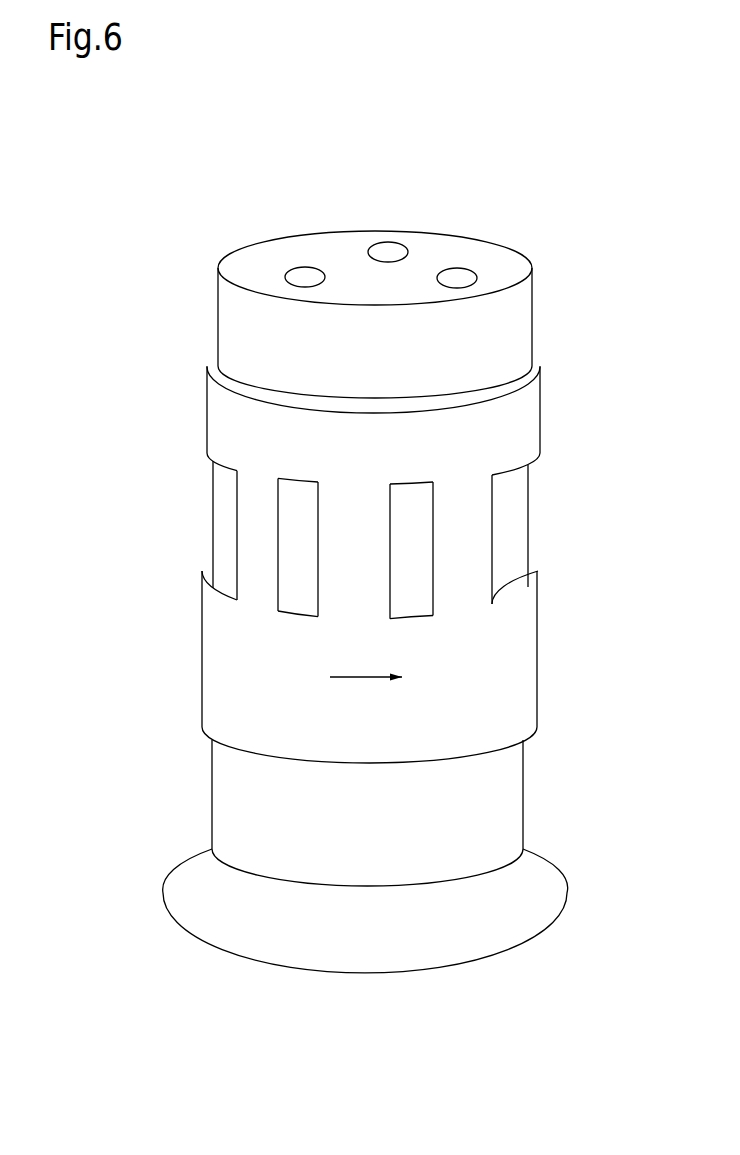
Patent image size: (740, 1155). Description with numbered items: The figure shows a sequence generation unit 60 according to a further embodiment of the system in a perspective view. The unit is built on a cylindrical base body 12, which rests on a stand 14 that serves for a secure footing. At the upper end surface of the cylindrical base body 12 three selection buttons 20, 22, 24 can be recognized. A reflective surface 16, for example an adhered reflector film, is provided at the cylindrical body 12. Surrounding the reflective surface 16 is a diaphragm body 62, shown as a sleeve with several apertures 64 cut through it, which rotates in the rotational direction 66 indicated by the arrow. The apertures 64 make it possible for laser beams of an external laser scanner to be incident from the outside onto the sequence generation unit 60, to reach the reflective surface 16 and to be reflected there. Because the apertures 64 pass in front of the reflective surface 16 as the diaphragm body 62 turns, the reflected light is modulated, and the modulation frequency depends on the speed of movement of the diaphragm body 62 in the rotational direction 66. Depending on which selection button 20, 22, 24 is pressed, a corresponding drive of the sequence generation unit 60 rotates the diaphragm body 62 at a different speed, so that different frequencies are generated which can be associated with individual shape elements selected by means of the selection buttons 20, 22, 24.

The sequence generation unit 60 is at (598, 228).
The selection button 20 is at (308, 275).
The selection button 22 is at (388, 250).
The selection button 24 is at (457, 277).
The reflective surface 16 is at (520, 382).
The diaphragm body 62 is at (517, 632).
The apertures 64 is at (417, 520).
The rotational direction 66 is at (353, 677).
The cylindrical base body 12 is at (500, 793).
The stand 14 is at (533, 877).